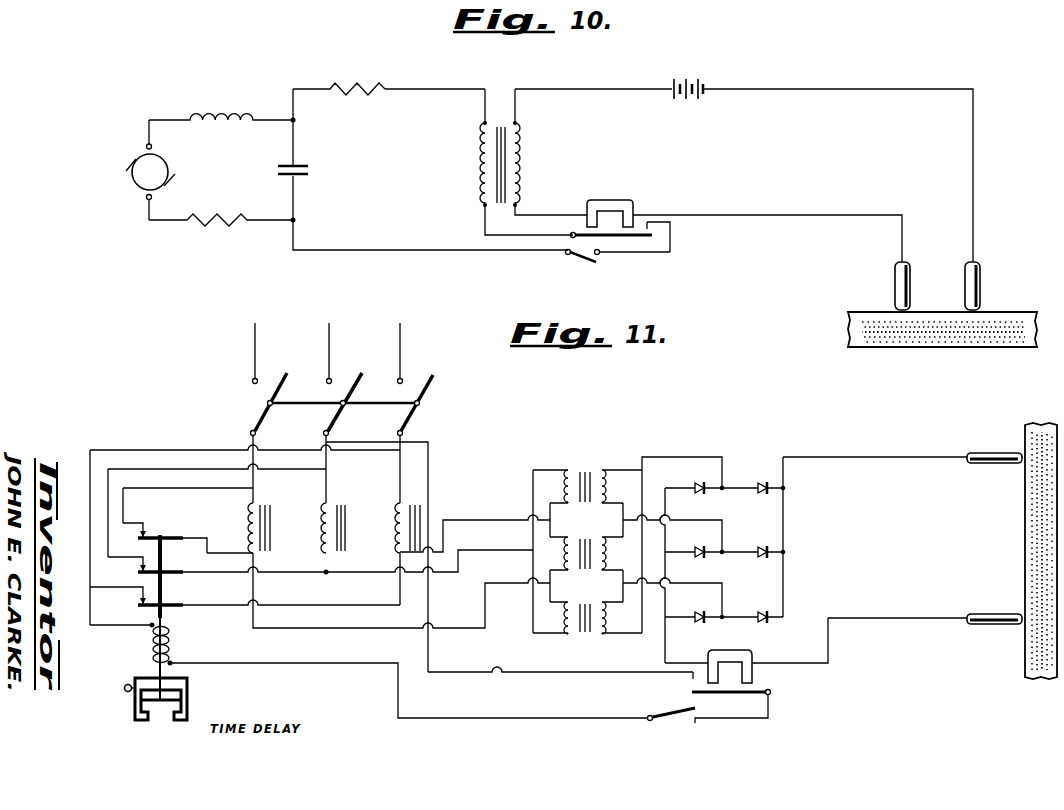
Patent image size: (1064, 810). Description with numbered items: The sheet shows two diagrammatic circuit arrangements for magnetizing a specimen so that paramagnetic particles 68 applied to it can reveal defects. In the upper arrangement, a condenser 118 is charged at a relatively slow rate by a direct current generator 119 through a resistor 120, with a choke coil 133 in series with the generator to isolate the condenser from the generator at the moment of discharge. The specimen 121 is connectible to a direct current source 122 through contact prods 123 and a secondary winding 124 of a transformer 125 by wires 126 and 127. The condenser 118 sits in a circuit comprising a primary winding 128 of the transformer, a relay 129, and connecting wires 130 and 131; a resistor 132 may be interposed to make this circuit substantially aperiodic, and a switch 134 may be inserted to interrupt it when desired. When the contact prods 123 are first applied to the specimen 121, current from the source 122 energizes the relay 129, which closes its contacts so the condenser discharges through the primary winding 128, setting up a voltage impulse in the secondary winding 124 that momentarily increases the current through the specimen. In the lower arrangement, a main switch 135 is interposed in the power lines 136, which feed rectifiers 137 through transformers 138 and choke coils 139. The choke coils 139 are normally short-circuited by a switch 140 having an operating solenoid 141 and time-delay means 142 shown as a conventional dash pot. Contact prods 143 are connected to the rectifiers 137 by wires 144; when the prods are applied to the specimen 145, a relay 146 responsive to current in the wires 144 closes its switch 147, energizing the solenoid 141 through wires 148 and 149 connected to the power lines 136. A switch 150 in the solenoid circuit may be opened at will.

In FIG. 10, the paramagnetic particles 68 is at (944, 337).
In FIG. 11, the paramagnetic particles 68 is at (1040, 545).
In FIG. 10, the condenser 118 is at (283, 170).
In FIG. 10, the direct current generator 119 is at (134, 182).
In FIG. 10, the resistor 120 is at (234, 226).
In FIG. 10, the specimen 121 is at (1010, 320).
In FIG. 10, the direct current source 122 is at (690, 99).
In FIG. 10, the contact prods 123 is at (895, 287).
In FIG. 10, the secondary winding 124 is at (520, 168).
In FIG. 10, the transformer 125 is at (501, 122).
In FIG. 10, the wire 126 is at (975, 163).
In FIG. 10, the wire 127 is at (802, 216).
In FIG. 10, the primary winding 128 is at (484, 158).
In FIG. 10, the relay 129 is at (660, 237).
In FIG. 10, the connecting wire 130 is at (408, 250).
In FIG. 10, the connecting wire 131 is at (419, 89).
In FIG. 10, the resistor 132 is at (336, 87).
In FIG. 10, the choke coil 133 is at (226, 118).
In FIG. 10, the switch 134 is at (573, 257).
In FIG. 11, the main switch 135 is at (425, 420).
In FIG. 11, the power lines 136 is at (425, 342).
In FIG. 11, the rectifiers 137 is at (738, 486).
In FIG. 11, the transformers 138 is at (585, 470).
In FIG. 11, the choke coils 139 is at (275, 520).
In FIG. 11, the switch 140 is at (167, 590).
In FIG. 11, the operating solenoid 141 is at (172, 642).
In FIG. 11, the time-delay means 142 is at (190, 698).
In FIG. 11, the contact prods 143 is at (993, 453).
In FIG. 11, the wires 144 is at (870, 457).
In FIG. 11, the specimen 145 is at (1025, 504).
In FIG. 11, the relay 146 is at (755, 663).
In FIG. 11, the switch 147 is at (688, 684).
In FIG. 11, the wire 148 is at (455, 718).
In FIG. 11, the wire 149 is at (508, 673).
In FIG. 11, the switch 150 is at (676, 722).